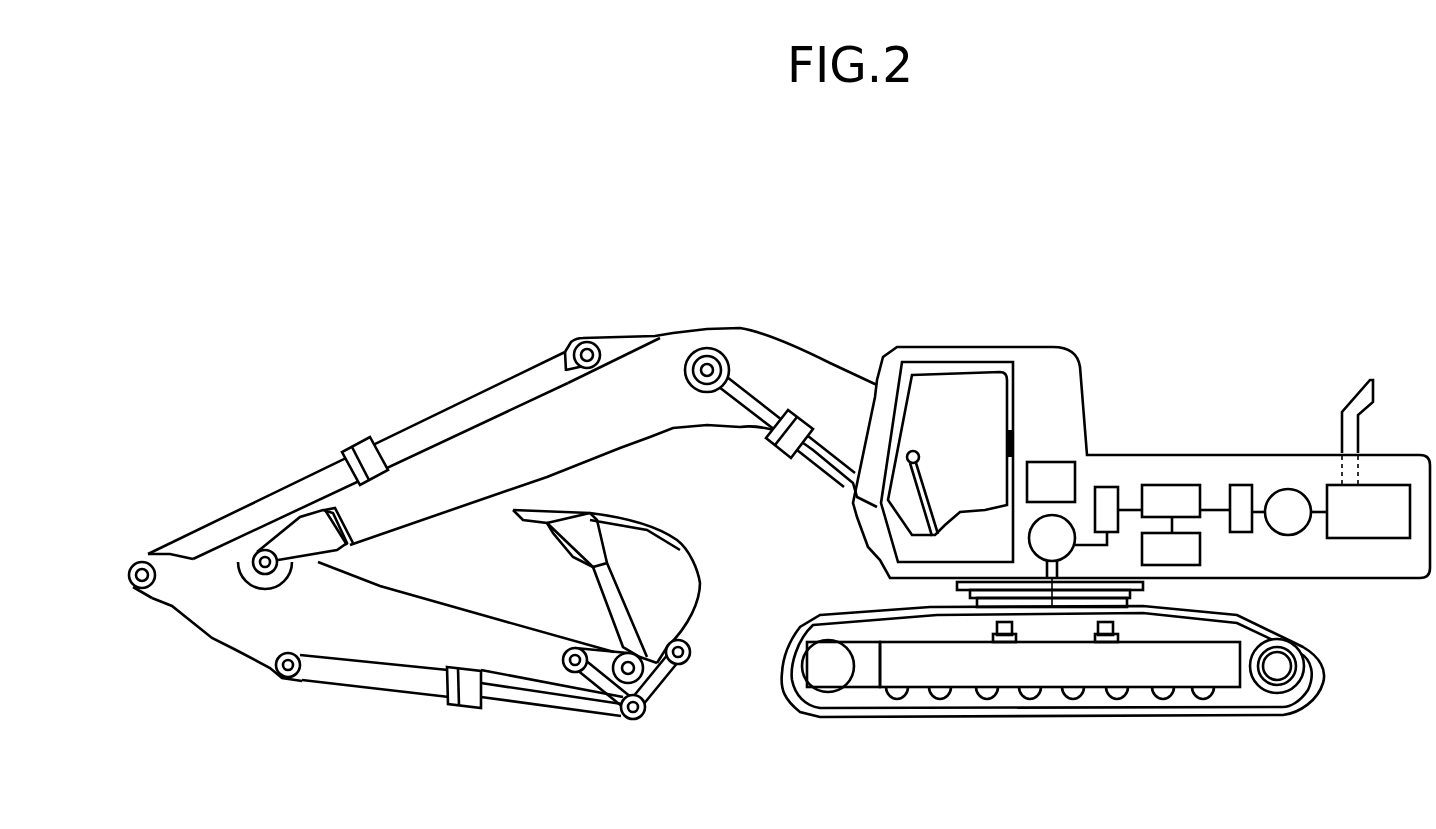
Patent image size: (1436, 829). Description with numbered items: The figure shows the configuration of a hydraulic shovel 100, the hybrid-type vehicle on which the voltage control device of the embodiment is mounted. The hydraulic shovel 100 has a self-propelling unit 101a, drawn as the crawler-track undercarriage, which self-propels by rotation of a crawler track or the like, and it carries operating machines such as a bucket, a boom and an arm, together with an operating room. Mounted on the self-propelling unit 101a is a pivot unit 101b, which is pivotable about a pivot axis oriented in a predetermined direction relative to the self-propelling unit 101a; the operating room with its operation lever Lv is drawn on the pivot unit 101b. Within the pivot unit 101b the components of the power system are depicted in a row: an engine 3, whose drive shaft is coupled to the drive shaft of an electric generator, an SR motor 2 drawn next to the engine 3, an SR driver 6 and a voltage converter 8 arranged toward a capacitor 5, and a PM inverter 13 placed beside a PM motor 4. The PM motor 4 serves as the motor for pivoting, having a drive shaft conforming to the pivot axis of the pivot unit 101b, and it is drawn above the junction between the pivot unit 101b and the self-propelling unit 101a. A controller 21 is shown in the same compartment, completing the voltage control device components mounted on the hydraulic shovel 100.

The hydraulic shovel 100 is at (1190, 224).
The self-propelling unit 101a is at (1143, 662).
The pivot unit 101b is at (961, 357).
The SR motor 2 is at (1302, 533).
The engine 3 is at (1383, 493).
The PM motor 4 is at (1073, 520).
The capacitor 5 is at (1172, 565).
The SR driver 6 is at (1237, 485).
The voltage converter 8 is at (1153, 485).
The PM inverter 13 is at (1107, 486).
The controller 21 is at (1047, 462).
The operation lever Lv is at (917, 452).